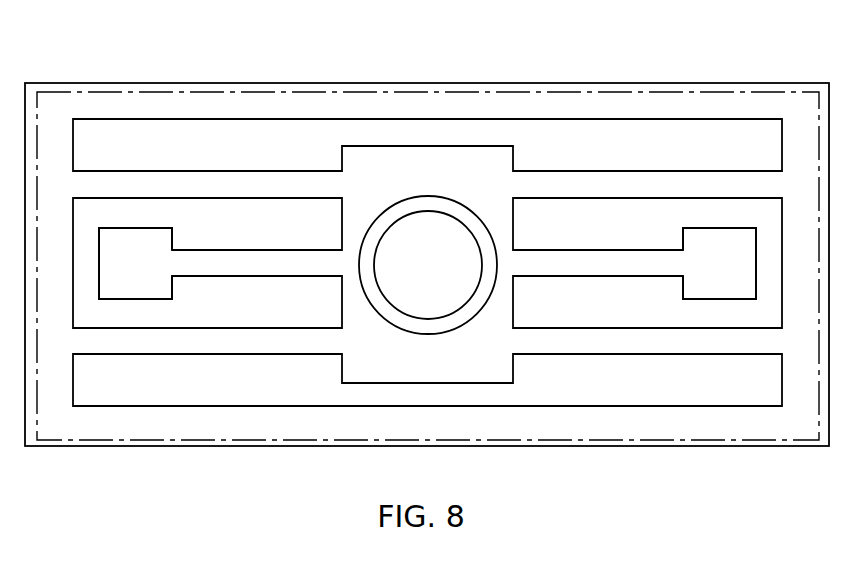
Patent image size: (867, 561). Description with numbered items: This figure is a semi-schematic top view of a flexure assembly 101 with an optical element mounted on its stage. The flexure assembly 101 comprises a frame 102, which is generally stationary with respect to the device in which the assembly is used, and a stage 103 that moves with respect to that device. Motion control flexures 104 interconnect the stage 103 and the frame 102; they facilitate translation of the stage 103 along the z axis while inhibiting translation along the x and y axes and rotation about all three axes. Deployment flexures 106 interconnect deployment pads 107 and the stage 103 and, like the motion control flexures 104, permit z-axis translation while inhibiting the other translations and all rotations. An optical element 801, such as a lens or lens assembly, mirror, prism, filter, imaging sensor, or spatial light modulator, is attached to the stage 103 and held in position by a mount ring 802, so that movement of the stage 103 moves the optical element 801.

The flexure assembly 101 is at (430, 83).
The frame 102 is at (580, 447).
The stage 103 is at (428, 383).
The motion control flexures 104 is at (274, 170).
The deployment flexures 106 is at (274, 249).
The deployment pads 107 is at (172, 299).
The optical element 801 is at (428, 211).
The mount ring 802 is at (467, 321).